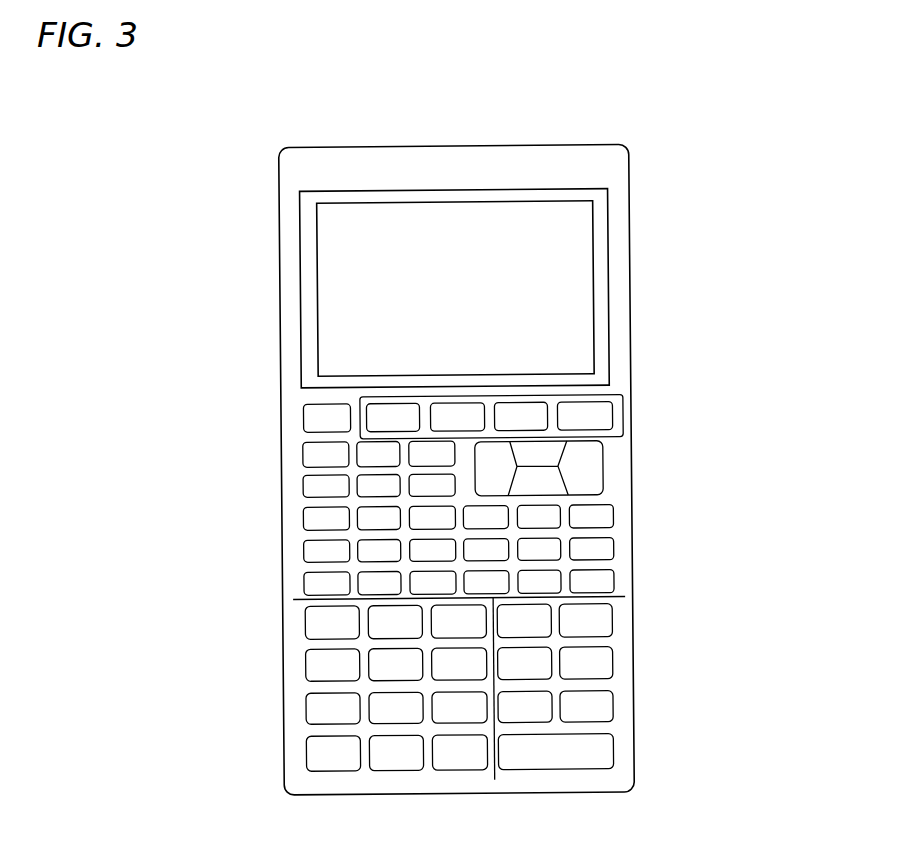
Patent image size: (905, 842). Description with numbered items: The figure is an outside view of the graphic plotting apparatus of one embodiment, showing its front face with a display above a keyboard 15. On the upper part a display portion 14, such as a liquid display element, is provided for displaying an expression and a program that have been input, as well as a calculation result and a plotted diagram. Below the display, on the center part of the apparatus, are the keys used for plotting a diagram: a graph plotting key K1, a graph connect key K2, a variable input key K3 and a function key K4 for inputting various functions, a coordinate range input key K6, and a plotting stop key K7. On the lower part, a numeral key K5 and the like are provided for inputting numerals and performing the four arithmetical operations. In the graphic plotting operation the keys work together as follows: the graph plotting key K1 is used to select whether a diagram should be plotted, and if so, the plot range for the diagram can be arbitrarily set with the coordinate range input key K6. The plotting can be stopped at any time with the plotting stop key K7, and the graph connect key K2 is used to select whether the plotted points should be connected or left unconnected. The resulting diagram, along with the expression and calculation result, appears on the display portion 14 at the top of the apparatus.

The display portion 14 is at (590, 293).
The keyboard 15 is at (477, 550).
The graph plotting key K1 is at (304, 407).
The graph connect key K2 is at (303, 448).
The variable input key K3 is at (303, 510).
The function key K4 is at (277, 542).
The numeral key K5 is at (277, 612).
The coordinate range input key K6 is at (612, 392).
The plotting stop key K7 is at (612, 503).